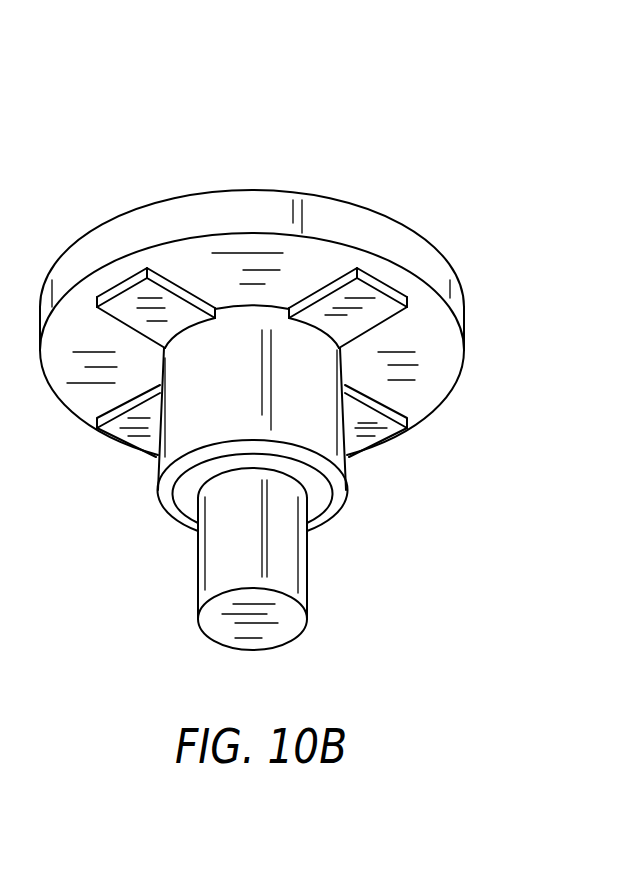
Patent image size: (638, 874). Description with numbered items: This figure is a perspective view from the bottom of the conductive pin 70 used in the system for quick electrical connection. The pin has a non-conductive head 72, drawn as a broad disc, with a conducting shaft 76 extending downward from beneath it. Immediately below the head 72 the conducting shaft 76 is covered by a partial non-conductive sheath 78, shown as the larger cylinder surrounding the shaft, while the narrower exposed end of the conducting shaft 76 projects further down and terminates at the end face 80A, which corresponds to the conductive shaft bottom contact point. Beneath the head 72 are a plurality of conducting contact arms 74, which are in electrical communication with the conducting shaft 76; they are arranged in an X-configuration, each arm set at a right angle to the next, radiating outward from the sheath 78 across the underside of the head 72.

The conductive pin 70 is at (351, 100).
The head 72 is at (407, 242).
The conducting contact arms 74 is at (148, 291).
The conducting shaft 76 is at (283, 552).
The non-conductive sheath 78 is at (185, 422).
The shaft end face 80A is at (275, 631).